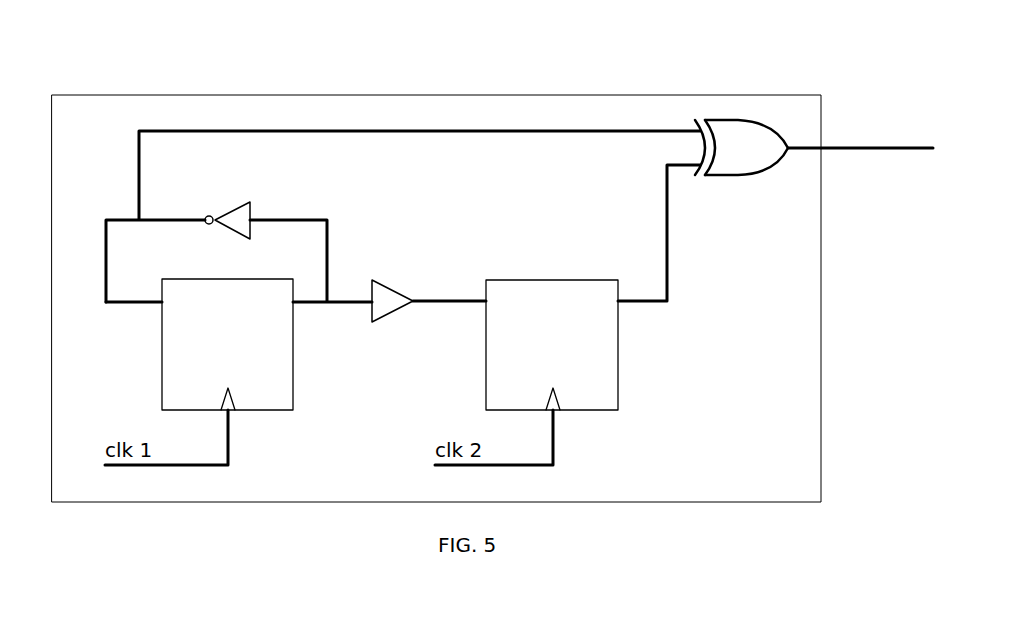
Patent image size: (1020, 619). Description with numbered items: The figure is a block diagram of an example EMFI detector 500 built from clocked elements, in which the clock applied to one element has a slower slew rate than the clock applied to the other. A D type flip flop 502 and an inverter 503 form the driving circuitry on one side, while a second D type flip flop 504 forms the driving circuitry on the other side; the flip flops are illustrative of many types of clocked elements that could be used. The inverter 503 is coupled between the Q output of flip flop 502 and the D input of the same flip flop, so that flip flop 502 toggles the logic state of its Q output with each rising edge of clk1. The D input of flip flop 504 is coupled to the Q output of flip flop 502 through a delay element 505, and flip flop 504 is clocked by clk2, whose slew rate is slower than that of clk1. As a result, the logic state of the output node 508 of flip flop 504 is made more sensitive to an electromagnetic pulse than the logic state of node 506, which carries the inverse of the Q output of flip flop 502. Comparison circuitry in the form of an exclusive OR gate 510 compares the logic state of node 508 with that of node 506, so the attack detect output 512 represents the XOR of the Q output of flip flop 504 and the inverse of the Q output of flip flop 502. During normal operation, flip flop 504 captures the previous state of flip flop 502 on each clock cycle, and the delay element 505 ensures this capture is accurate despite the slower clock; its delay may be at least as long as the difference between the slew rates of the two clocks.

The detector 500 is at (435, 95).
The D type flip flop 502 is at (293, 390).
The inverter 503 is at (237, 205).
The D type flip flop 504 is at (618, 390).
The delay element 505 is at (393, 283).
The node 506 is at (139, 158).
The node 508 is at (667, 255).
The exclusive OR gate 510 is at (765, 170).
The attack detect output 512 is at (895, 152).